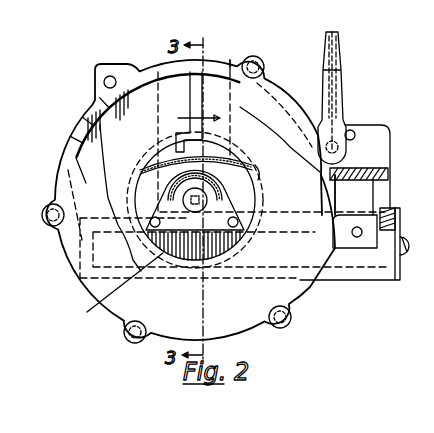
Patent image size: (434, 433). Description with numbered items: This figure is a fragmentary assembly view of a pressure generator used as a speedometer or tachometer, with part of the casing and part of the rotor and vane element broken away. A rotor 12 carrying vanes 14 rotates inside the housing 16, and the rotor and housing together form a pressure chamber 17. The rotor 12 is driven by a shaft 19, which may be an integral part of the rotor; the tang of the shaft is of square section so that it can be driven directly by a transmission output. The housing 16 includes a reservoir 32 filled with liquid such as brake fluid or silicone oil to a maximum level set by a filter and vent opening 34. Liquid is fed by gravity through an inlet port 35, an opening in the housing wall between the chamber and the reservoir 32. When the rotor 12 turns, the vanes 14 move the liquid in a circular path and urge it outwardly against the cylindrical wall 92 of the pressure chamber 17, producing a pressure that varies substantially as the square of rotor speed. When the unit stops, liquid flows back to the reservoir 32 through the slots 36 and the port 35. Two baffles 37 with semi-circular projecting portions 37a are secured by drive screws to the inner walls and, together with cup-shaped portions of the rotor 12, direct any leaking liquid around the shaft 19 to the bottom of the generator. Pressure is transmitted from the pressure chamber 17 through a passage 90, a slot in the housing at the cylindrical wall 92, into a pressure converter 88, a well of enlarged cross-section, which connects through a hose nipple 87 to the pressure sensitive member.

The vanes 14 is at (160, 66).
The slots 36 is at (152, 70).
The cylindrical wall 92 is at (85, 118).
The housing 16 is at (86, 118).
The pressure chamber 17 is at (75, 134).
The rotor 12 is at (158, 166).
The baffles 37 is at (150, 196).
The semi-circular projecting portions 37a is at (248, 172).
The shaft 19 is at (207, 203).
The hose nipple 87 is at (343, 79).
The pressure converter 88 is at (352, 162).
The filter and vent opening 34 is at (392, 208).
The reservoir 32 is at (407, 254).
The passage 90 is at (328, 255).
The inlet port 35 is at (88, 312).